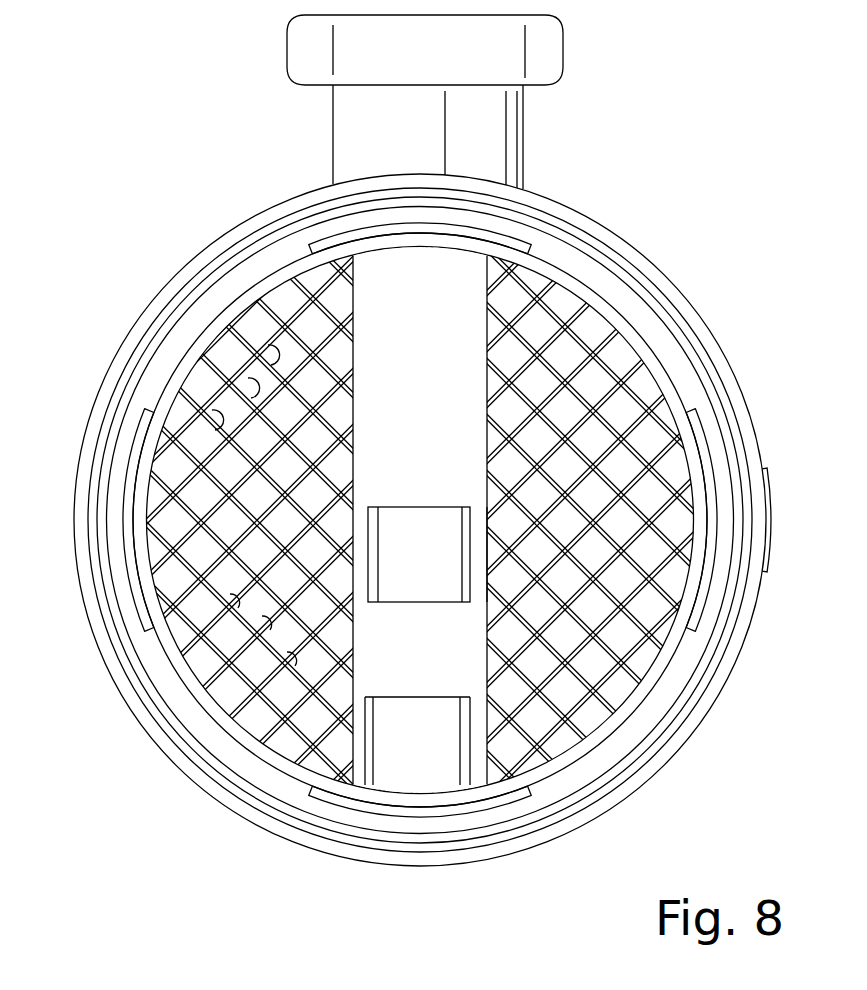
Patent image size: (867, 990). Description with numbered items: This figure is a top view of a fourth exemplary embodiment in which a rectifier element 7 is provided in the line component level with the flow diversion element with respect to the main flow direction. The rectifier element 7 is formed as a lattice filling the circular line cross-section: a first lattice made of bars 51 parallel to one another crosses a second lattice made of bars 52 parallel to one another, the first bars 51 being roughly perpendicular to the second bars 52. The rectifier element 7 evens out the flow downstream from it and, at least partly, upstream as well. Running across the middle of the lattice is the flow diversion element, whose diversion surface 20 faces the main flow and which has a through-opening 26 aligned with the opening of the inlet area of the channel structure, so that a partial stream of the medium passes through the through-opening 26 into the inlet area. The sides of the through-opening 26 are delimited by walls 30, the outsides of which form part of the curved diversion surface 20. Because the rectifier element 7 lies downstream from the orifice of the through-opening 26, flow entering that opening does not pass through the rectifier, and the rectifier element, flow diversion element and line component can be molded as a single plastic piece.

The rectifier element 7 is at (590, 390).
The diversion surface 20 is at (440, 348).
The through-opening 26 is at (437, 571).
The walls 30 is at (478, 555).
The first bars 51 is at (212, 410).
The second bars 52 is at (287, 652).